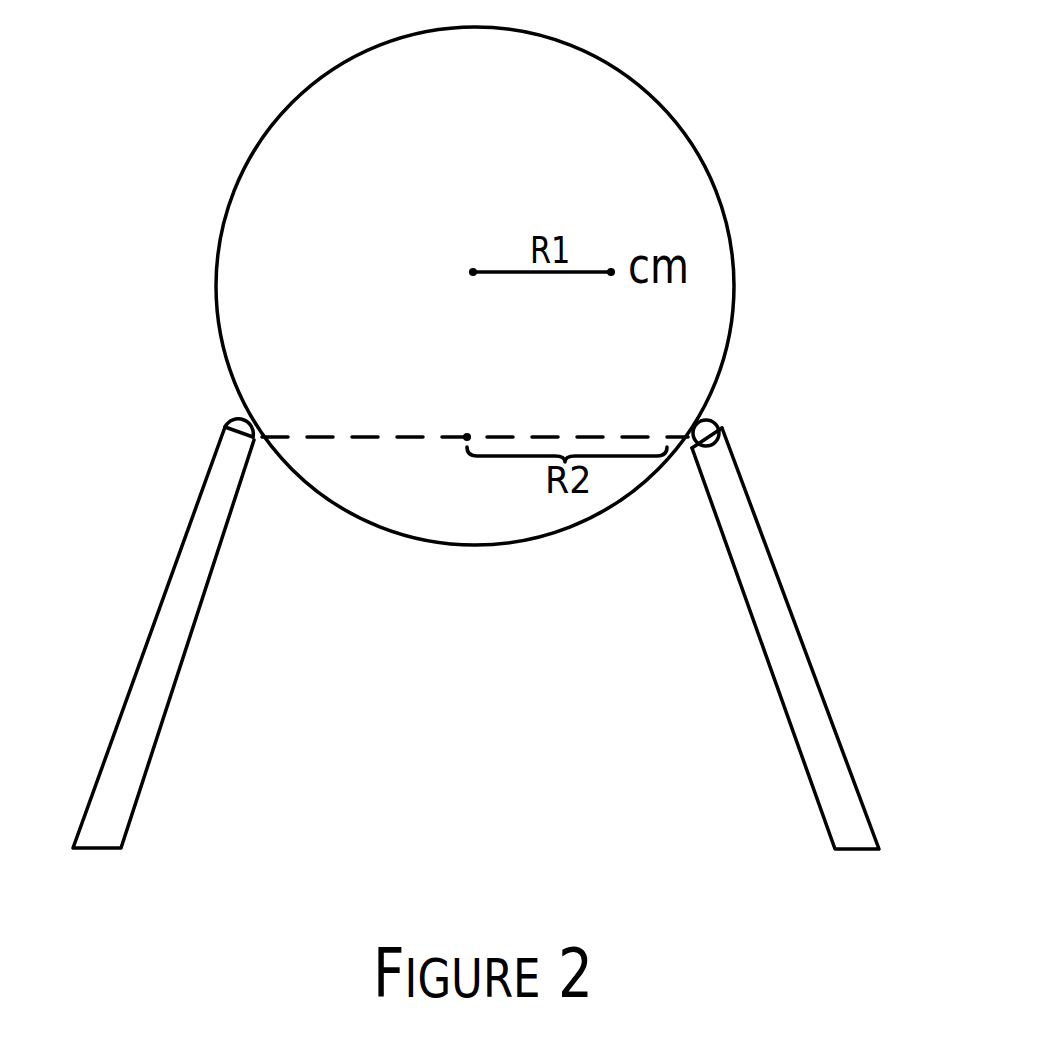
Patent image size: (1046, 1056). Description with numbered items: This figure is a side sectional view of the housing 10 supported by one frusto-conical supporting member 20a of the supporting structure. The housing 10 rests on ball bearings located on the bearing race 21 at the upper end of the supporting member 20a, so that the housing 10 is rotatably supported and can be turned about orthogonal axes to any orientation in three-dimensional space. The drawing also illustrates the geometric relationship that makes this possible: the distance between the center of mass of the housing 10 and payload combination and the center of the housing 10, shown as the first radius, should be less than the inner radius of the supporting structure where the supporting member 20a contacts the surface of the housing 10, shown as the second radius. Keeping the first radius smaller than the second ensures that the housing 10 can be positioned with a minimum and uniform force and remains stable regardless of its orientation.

The housing 10 is at (722, 208).
The frusto-conical supporting member 20a is at (775, 560).
The bearing race 21 is at (712, 421).